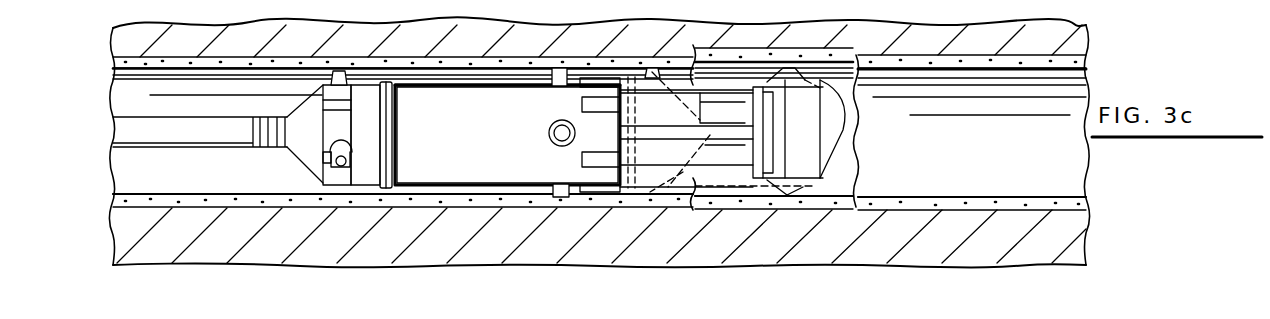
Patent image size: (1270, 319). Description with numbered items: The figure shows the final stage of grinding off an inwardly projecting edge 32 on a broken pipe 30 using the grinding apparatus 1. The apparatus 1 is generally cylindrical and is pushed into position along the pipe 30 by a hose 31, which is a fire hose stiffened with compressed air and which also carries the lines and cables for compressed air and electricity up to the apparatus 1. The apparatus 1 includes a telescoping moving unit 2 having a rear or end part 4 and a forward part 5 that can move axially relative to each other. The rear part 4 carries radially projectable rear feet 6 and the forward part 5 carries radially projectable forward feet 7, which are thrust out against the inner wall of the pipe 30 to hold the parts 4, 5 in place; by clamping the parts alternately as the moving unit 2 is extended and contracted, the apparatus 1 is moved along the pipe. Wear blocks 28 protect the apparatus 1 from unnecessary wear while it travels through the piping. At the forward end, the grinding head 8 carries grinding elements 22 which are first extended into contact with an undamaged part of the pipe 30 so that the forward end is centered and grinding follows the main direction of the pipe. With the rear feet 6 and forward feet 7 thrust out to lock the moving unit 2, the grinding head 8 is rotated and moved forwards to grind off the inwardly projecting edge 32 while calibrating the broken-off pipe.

The grinding apparatus 1 is at (490, 83).
The moving unit 2 is at (443, 140).
The rear or end part 4 is at (364, 96).
The forward part 5 is at (445, 90).
The rear feet 6 is at (350, 86).
The forward feet 7 is at (562, 72).
The grinding head 8 is at (828, 108).
The grinding elements 22 is at (785, 66).
The wear blocks 28 is at (340, 98).
The pipe 30 is at (599, 142).
The hose 31 is at (148, 125).
The inwardly projecting edge 32 is at (695, 194).